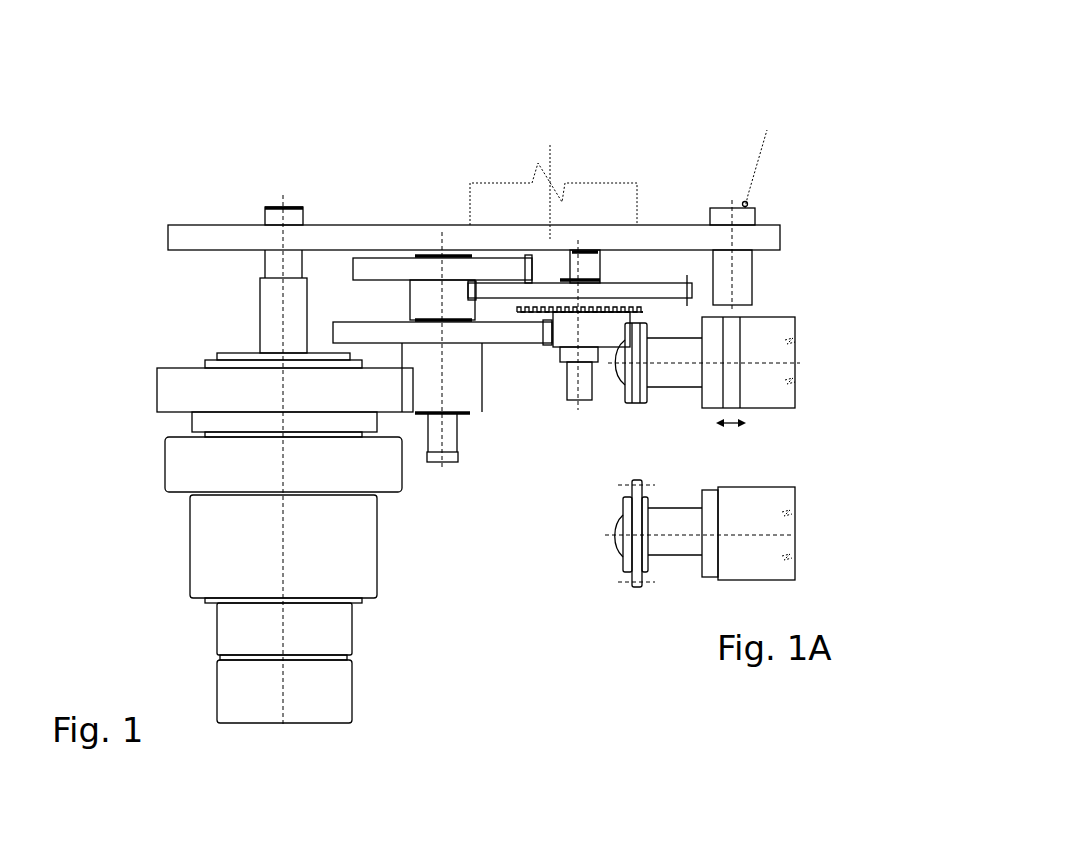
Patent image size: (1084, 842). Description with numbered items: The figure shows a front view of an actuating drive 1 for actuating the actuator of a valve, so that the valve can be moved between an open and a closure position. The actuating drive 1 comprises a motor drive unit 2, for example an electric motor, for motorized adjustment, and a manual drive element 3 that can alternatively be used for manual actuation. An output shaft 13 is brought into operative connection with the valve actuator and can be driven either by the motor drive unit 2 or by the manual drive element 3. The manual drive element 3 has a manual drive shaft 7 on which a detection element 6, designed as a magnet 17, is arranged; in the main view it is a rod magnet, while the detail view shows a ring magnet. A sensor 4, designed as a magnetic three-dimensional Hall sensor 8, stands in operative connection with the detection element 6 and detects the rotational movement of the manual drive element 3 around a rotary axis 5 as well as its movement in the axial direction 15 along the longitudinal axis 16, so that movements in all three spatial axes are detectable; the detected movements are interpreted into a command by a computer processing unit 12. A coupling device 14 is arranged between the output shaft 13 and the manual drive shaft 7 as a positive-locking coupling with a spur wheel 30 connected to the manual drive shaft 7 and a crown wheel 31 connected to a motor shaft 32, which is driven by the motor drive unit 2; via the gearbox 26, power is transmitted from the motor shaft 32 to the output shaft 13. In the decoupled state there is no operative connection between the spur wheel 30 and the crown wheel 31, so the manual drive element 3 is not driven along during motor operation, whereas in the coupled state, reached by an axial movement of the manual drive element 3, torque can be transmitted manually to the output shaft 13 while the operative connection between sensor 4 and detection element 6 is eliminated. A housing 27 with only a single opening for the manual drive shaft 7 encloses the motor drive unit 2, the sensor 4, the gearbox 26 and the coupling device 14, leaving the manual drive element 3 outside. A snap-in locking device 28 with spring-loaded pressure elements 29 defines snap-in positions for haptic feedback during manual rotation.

In FIG. 1, the actuating drive 1 is at (517, 376).
In FIG. 1, the motor drive unit 2 is at (495, 198).
In FIG. 1, the manual drive element 3 is at (838, 387).
In FIG. 1, the sensor 4 is at (759, 169).
In FIG. 1, the rotary axis 5 is at (846, 403).
In FIG. 1A, the rotary axis 5 is at (832, 574).
In FIG. 1, the detection element 6 is at (850, 453).
In FIG. 1A, the detection element 6 is at (632, 645).
In FIG. 1, the manual drive shaft 7 is at (783, 353).
In FIG. 1A, the manual drive shaft 7 is at (778, 510).
In FIG. 1, the magnetic 3D Hall sensor 8 is at (725, 272).
In FIG. 1, the computer processing unit 12 is at (375, 138).
In FIG. 1, the output shaft 13 is at (213, 557).
In FIG. 1, the coupling device 14 is at (596, 418).
In FIG. 1, the axial direction 15 is at (732, 427).
In FIG. 1A, the axial direction 15 is at (698, 531).
In FIG. 1, the longitudinal axis 16 is at (797, 363).
In FIG. 1A, the longitudinal axis 16 is at (780, 533).
In FIG. 1, the magnet 17 is at (733, 402).
In FIG. 1A, the magnet 17 is at (708, 572).
In FIG. 1, the gearbox 26 is at (345, 300).
In FIG. 1, the housing 27 is at (221, 186).
In FIG. 1, the snap-in locking device 28 is at (825, 328).
In FIG. 1A, the snap-in locking device 28 is at (850, 582).
In FIG. 1, the pressure elements 29 is at (766, 336).
In FIG. 1A, the pressure elements 29 is at (762, 568).
In FIG. 1, the spur wheel 30 is at (637, 408).
In FIG. 1A, the spur wheel 30 is at (634, 570).
In FIG. 1, the crown wheel 31 is at (608, 280).
In FIG. 1, the motor shaft 32 is at (585, 252).